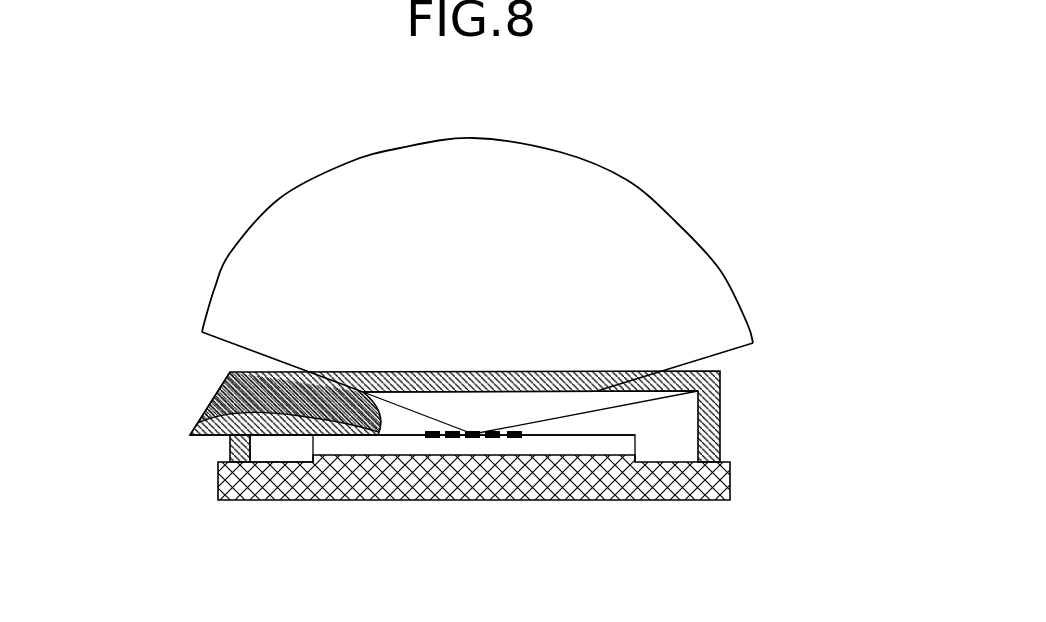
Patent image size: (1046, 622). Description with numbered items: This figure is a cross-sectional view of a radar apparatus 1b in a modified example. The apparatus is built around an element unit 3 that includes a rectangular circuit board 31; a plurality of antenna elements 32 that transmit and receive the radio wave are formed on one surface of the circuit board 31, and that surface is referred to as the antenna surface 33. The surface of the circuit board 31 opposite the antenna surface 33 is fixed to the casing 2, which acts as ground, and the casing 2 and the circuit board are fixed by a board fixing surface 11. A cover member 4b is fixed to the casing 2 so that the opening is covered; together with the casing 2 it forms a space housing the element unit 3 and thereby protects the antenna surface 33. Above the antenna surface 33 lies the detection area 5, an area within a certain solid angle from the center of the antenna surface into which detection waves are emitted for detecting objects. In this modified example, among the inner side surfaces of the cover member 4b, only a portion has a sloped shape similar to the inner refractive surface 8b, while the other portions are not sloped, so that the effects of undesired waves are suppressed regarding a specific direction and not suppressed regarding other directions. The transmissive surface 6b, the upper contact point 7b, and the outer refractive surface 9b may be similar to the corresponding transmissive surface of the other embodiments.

The radar apparatus 1b is at (189, 113).
The detection area 5 is at (403, 145).
The cover member 4b is at (230, 372).
The upper contact point 7b is at (363, 392).
The transmissive surface 6b is at (477, 393).
The outer refractive surface 9b is at (206, 410).
The inner refractive surface 8b is at (207, 437).
The element unit 3 is at (563, 500).
The casing 2 is at (732, 488).
The board fixing surface 11 is at (303, 450).
The circuit board 31 is at (355, 443).
The antenna elements 32 is at (470, 437).
The antenna surface 33 is at (578, 428).